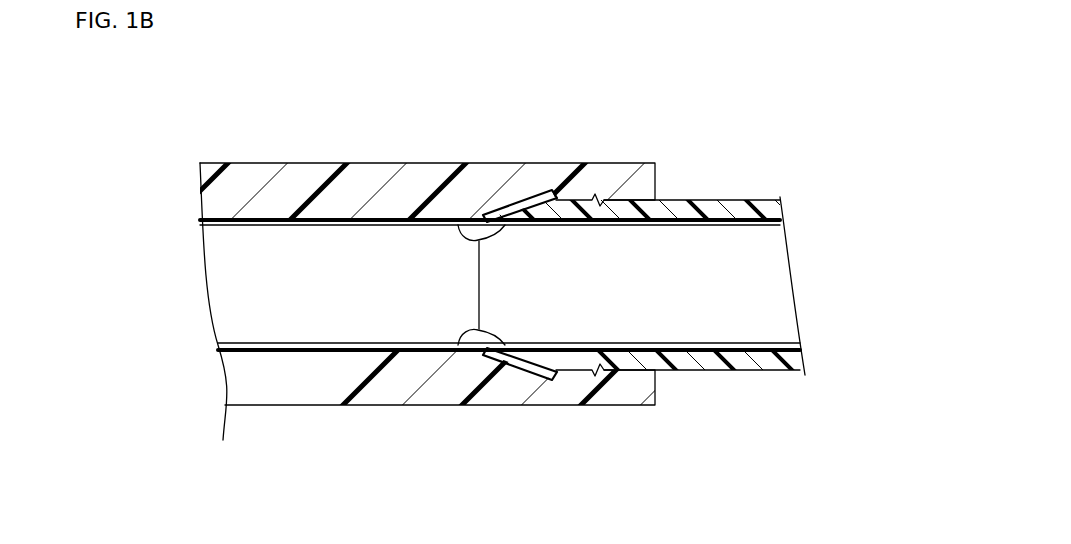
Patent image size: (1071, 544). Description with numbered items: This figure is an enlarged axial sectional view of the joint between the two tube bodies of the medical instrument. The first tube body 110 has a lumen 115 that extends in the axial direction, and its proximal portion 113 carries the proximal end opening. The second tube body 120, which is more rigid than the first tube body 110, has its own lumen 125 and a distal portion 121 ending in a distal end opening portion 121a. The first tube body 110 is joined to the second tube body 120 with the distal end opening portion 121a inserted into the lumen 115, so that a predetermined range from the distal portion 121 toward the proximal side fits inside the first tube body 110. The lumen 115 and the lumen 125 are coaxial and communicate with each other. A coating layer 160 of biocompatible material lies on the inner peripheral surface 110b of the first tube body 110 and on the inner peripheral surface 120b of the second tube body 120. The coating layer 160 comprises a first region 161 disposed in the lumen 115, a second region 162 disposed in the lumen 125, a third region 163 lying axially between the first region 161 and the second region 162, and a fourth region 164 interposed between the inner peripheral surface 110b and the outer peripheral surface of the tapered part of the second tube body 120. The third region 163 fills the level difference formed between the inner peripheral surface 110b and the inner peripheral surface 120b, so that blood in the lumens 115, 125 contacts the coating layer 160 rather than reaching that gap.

The first tube body 110 is at (375, 177).
The inner peripheral surface of the first tube body 110b is at (318, 222).
The proximal portion of the first tube body 113 is at (624, 157).
The lumen of the first tube body 115 is at (233, 245).
The second tube body 120 is at (763, 203).
The inner peripheral surface of the second tube body 120b is at (582, 225).
The distal portion of the second tube body 121 is at (508, 196).
The distal end opening portion of the second tube body 121a is at (480, 275).
The lumen of the second tube body 125 is at (688, 263).
The coating layer 160 is at (367, 360).
The first region of the coating layer 161 is at (307, 347).
The second region of the coating layer 162 is at (633, 343).
The third region of the coating layer 163 is at (457, 347).
The fourth region of the coating layer 164 is at (536, 374).